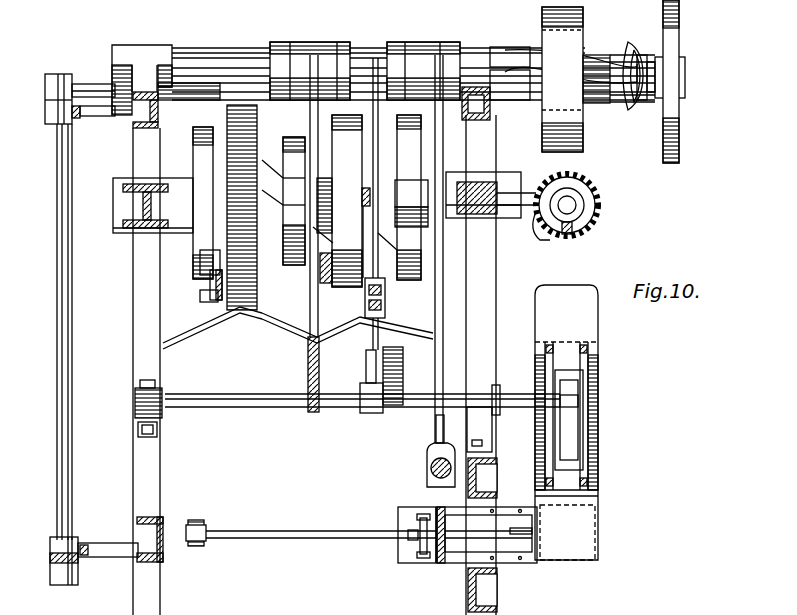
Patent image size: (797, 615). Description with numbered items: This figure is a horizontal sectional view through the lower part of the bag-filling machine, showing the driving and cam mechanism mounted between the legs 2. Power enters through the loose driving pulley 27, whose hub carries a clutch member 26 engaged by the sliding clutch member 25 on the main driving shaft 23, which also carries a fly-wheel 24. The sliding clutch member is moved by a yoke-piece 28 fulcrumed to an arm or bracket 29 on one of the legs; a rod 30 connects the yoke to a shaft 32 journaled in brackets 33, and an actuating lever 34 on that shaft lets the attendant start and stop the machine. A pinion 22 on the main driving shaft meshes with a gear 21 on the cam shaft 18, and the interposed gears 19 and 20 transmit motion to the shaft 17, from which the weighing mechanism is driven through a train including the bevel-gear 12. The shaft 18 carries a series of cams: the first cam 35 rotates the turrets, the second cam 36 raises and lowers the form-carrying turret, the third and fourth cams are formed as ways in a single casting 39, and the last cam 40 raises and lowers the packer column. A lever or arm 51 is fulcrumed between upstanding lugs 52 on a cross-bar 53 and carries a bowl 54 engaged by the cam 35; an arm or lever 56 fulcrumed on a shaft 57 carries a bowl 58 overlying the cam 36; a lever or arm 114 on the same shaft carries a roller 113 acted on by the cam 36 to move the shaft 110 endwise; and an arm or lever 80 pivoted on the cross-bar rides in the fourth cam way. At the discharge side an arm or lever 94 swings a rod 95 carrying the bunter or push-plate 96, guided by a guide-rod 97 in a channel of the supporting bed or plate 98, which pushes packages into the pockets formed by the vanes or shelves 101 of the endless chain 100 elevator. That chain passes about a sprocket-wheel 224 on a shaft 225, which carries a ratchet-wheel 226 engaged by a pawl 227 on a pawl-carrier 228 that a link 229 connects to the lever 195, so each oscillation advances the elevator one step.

The leg 2 is at (135, 297).
The bevel-gear 12 is at (359, 605).
The shaft 17 is at (572, 232).
The shaft 18 is at (500, 150).
The gear 19 is at (549, 238).
The gear 20 is at (598, 207).
The gear 21 is at (262, 300).
The pinion 22 is at (286, 40).
The main driving shaft 23 is at (220, 85).
The fly-wheel 24 is at (682, 142).
The sliding clutch member 25 is at (636, 110).
The clutch member 26 is at (600, 104).
The loose driving pulley 27 is at (578, 45).
The yoke-piece 28 is at (660, 55).
The arm or bracket 29 is at (524, 48).
The rod 30 is at (97, 100).
The shaft 32 is at (70, 392).
The bracket 33 is at (78, 125).
The actuating lever 34 is at (52, 570).
The cam 35 is at (200, 158).
The cam 36 is at (290, 138).
The casting 39 is at (339, 201).
The cam 40 is at (397, 124).
The lever or arm 51 is at (200, 312).
The upstanding lug 52 is at (200, 268).
The cross-bar 53 is at (205, 315).
The bowl 54 is at (205, 288).
The arm or lever 56 is at (308, 350).
The shaft 57 is at (370, 50).
The bowl 58 is at (293, 186).
The arm or lever 80 is at (327, 283).
The arm or lever 94 is at (202, 522).
The rod 95 is at (238, 540).
The bunter or push-plate 96 is at (420, 520).
The guide-rod 97 is at (478, 540).
The supporting bed or plate 98 is at (430, 558).
The endless chain 100 is at (598, 472).
The vane or shelf 101 is at (596, 507).
The shaft 110 is at (427, 467).
The roller 113 is at (480, 172).
The lever or arm 114 is at (440, 335).
The lever 195 is at (367, 188).
The sprocket-wheel 224 is at (580, 382).
The shaft 225 is at (277, 408).
The ratchet-wheel 226 is at (398, 432).
The pawl 227 is at (403, 381).
The pawl-carrier 228 is at (365, 402).
The link 229 is at (377, 270).